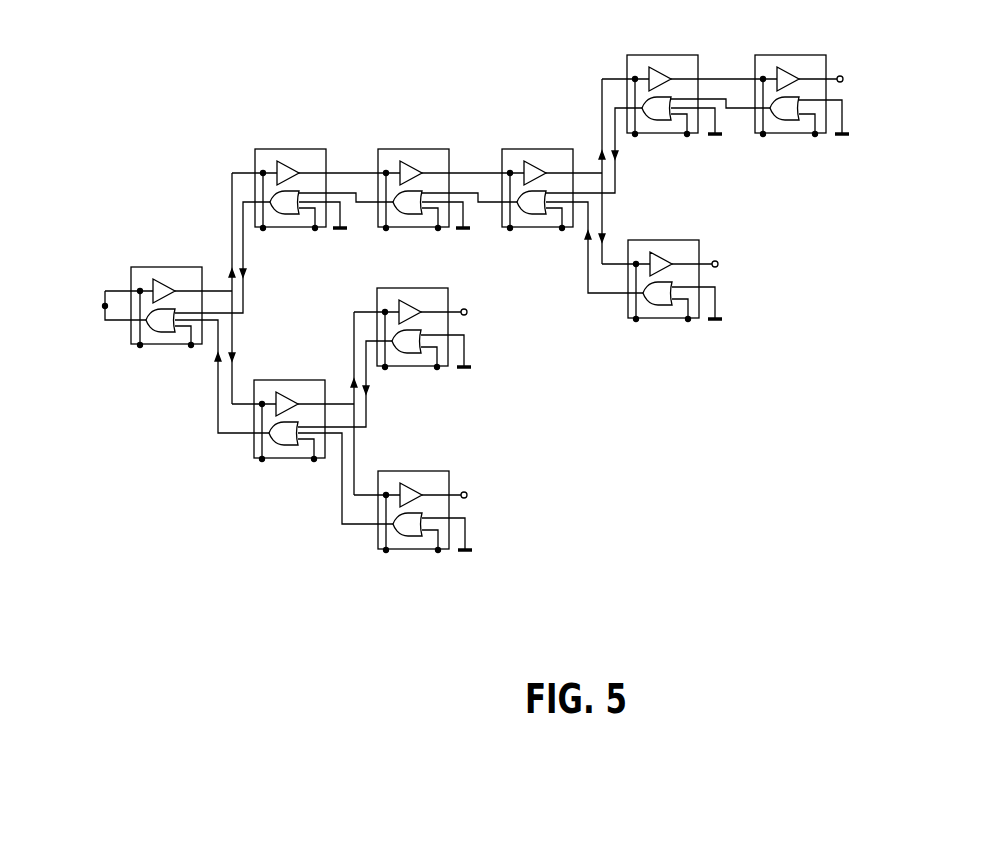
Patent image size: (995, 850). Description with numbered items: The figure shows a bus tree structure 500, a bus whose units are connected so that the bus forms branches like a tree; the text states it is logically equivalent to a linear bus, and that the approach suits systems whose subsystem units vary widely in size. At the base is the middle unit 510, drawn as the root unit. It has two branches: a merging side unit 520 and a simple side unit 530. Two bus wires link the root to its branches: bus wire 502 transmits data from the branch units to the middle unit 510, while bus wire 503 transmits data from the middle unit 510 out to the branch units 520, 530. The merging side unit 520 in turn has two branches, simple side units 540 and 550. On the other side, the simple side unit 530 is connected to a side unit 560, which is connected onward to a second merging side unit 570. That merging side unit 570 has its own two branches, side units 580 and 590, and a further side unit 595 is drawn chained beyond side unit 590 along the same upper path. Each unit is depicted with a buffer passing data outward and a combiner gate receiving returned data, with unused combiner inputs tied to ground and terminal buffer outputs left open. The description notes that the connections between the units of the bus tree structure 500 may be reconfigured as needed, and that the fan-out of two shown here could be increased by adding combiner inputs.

The bus tree structure 500 is at (197, 561).
The bus wire 502 is at (219, 411).
The bus wire 503 is at (234, 378).
The middle unit 510 is at (131, 277).
The merging side unit 520 is at (254, 458).
The simple side unit 530 is at (326, 149).
The simple side unit 540 is at (450, 474).
The simple side unit 550 is at (449, 291).
The side unit 560 is at (449, 149).
The merging side unit 570 is at (574, 149).
The side unit 580 is at (699, 244).
The side unit 590 is at (698, 62).
The side unit 595 is at (826, 59).